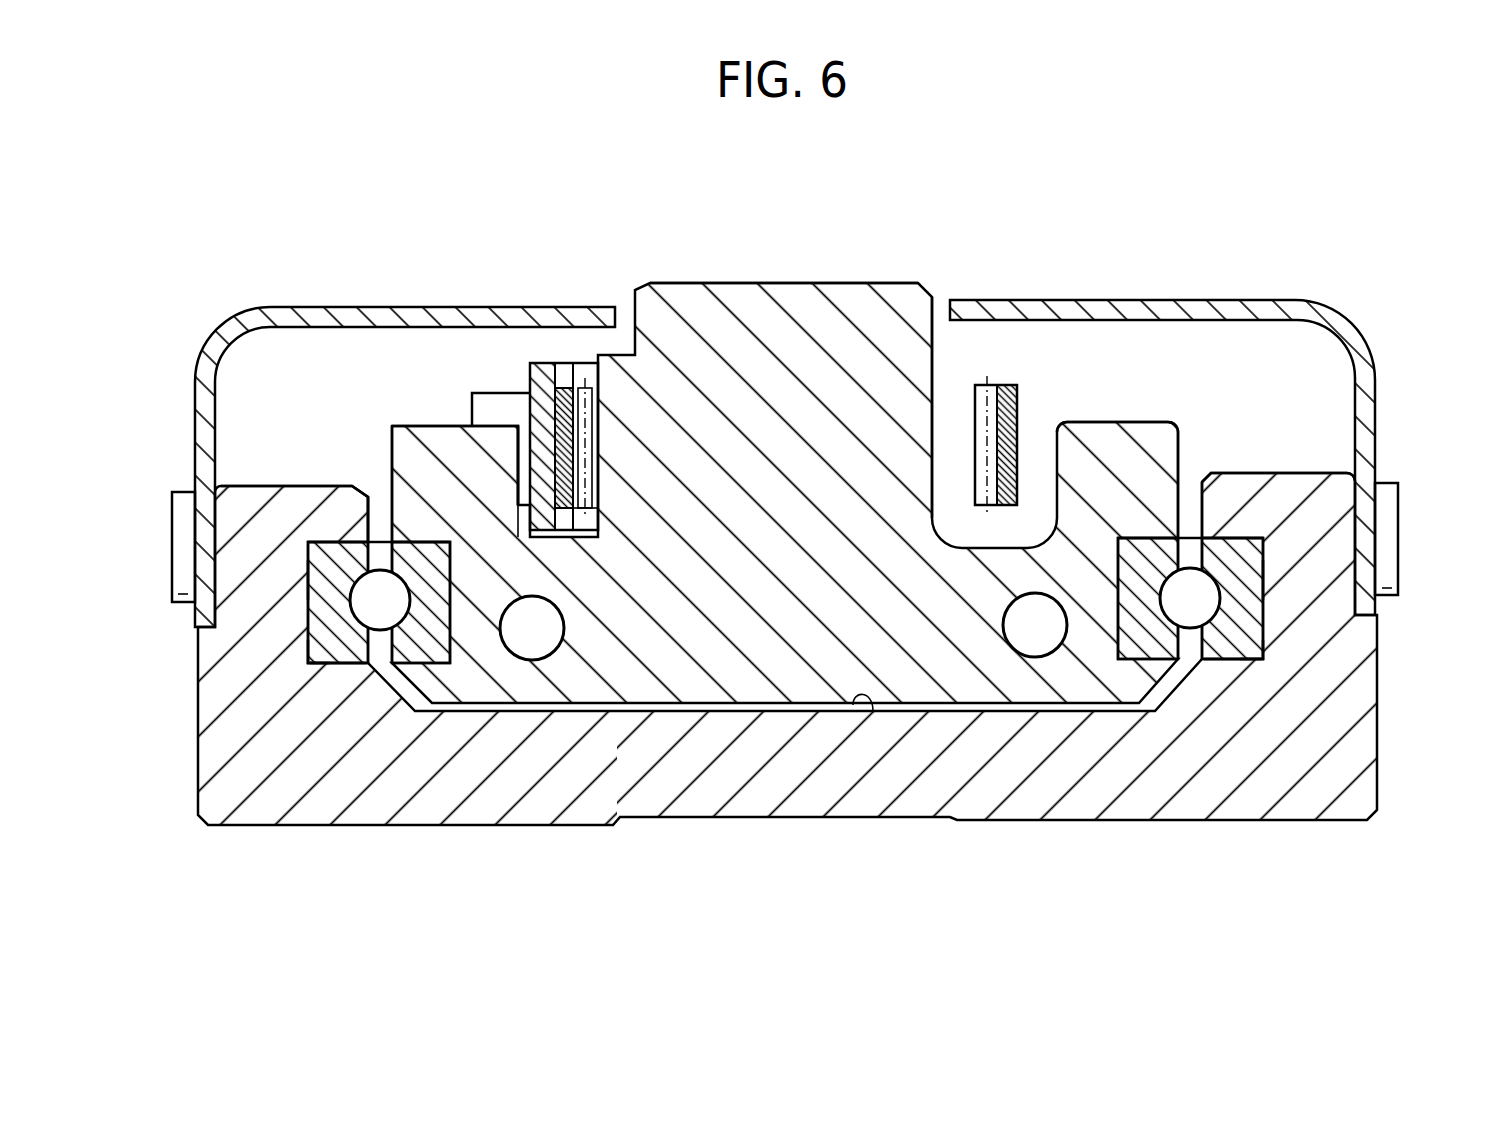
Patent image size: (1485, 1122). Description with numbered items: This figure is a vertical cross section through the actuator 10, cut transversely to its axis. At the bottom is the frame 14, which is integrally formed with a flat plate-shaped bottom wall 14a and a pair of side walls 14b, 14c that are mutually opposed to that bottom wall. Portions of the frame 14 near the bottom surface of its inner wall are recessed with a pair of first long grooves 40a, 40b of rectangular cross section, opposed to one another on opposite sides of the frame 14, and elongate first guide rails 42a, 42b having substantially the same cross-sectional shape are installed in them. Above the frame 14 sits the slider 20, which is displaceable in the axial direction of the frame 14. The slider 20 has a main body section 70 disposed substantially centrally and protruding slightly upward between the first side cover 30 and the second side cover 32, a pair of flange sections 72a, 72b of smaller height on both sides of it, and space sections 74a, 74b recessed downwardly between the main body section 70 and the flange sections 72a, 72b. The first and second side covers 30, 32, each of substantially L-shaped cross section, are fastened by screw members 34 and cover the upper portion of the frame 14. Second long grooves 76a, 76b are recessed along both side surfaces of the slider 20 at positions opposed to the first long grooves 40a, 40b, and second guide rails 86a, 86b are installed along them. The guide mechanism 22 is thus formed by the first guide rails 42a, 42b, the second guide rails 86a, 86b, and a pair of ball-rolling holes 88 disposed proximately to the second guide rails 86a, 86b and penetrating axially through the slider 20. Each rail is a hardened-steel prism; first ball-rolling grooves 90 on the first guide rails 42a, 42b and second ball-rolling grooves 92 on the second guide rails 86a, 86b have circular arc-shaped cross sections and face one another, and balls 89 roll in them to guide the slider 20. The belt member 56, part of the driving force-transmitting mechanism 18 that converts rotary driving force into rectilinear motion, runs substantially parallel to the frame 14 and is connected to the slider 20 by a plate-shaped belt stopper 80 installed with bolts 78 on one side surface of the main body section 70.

The actuator 10 is at (1047, 164).
The frame 14 is at (795, 778).
The bottom wall 14a is at (873, 711).
The side wall 14b is at (244, 492).
The side wall 14c is at (1322, 482).
The driving force-transmitting mechanism 18 is at (1005, 383).
The slider 20 is at (843, 283).
The guide mechanism 22 is at (331, 540).
The first side cover 30 is at (1350, 334).
The second side cover 32 is at (224, 336).
The screw member 34 is at (182, 572).
The first long groove 40a is at (1265, 650).
The first long groove 40b is at (305, 653).
The first guide rail 42a is at (1237, 637).
The first guide rail 42b is at (327, 668).
The belt member 56 is at (567, 387).
The main body section 70 is at (708, 322).
The flange section 72a is at (1108, 440).
The flange section 72b is at (437, 440).
The space section 74a is at (952, 443).
The space section 74b is at (518, 515).
The second long groove 76a is at (1172, 538).
The second long groove 76b is at (380, 530).
The bolt 78 is at (512, 406).
The belt stopper 80 is at (540, 365).
The second guide rail 86a is at (1142, 637).
The second guide rail 86b is at (428, 640).
The ball-rolling hole 88 is at (520, 655).
The ball 89 is at (378, 584).
The first ball-rolling groove 90 is at (347, 573).
The second ball-rolling groove 92 is at (383, 630).